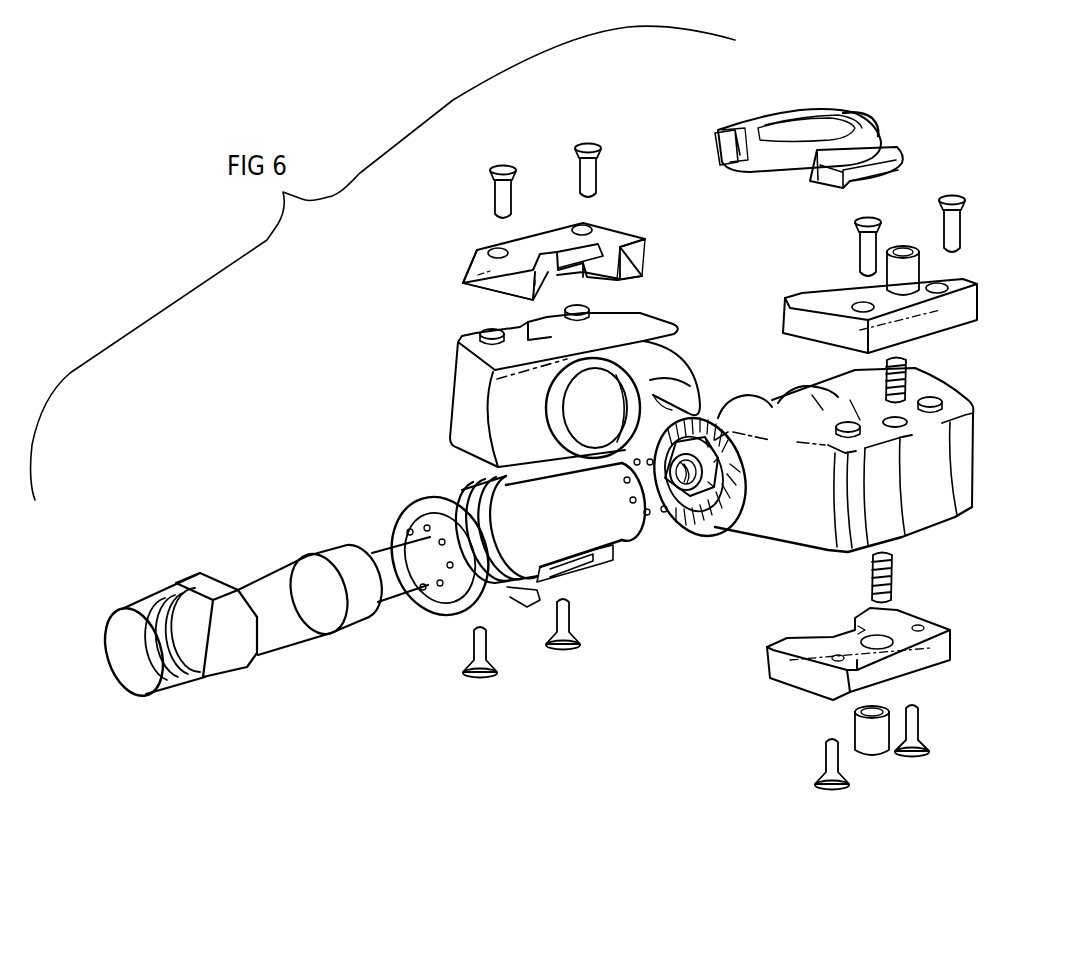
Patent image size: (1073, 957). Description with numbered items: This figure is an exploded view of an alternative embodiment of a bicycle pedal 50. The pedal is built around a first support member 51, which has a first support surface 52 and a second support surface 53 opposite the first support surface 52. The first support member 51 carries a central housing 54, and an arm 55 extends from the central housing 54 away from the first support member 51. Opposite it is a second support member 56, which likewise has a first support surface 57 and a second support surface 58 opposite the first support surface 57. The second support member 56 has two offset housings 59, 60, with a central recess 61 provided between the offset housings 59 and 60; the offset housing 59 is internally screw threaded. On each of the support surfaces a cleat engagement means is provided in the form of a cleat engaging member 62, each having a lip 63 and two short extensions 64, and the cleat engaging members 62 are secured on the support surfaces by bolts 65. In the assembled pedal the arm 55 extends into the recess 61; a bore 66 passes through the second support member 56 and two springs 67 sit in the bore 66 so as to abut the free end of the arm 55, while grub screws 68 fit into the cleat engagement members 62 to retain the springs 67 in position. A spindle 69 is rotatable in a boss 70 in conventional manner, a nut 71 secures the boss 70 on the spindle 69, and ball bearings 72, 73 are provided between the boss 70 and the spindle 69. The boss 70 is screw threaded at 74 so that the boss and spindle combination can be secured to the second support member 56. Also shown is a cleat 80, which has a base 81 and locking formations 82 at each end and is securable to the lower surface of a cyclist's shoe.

The bicycle pedal 50 is at (343, 375).
The first support member 51 is at (450, 398).
The first support surface 52 is at (627, 320).
The second support surface 53 is at (454, 466).
The central housing 54 is at (692, 358).
The arm 55 is at (700, 392).
The second support member 56 is at (818, 543).
The first support surface 57 is at (823, 410).
The second support surface 58 is at (770, 556).
The offset housing 59 is at (752, 393).
The offset housing 60 is at (860, 420).
The central recess 61 is at (781, 381).
The cleat engaging member 62 is at (470, 258).
The lip 63 is at (575, 248).
The short extension 64 is at (643, 247).
The bolt 65 is at (488, 187).
The bore 66 is at (997, 402).
The spring 67 is at (920, 370).
The grub screw 68 is at (922, 252).
The spindle 69 is at (378, 671).
The boss 70 is at (575, 540).
The nut 71 is at (683, 527).
The ball bearings 72 is at (424, 597).
The ball bearings 73 is at (646, 518).
The screw thread 74 is at (514, 605).
The cleat 80 is at (846, 158).
The base 81 is at (768, 173).
The locking formation 82 is at (718, 128).